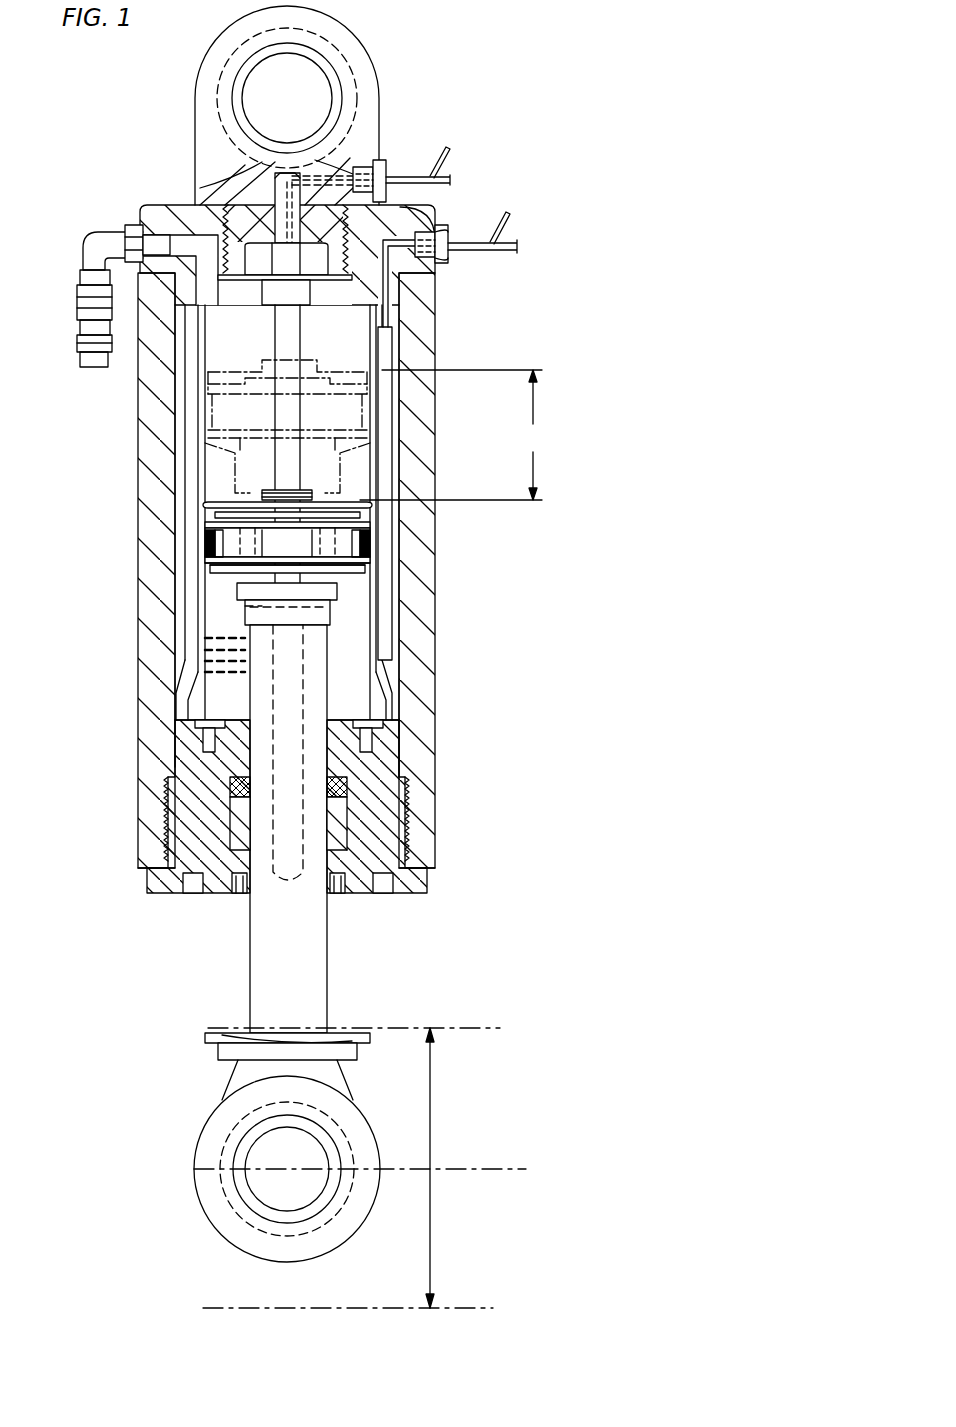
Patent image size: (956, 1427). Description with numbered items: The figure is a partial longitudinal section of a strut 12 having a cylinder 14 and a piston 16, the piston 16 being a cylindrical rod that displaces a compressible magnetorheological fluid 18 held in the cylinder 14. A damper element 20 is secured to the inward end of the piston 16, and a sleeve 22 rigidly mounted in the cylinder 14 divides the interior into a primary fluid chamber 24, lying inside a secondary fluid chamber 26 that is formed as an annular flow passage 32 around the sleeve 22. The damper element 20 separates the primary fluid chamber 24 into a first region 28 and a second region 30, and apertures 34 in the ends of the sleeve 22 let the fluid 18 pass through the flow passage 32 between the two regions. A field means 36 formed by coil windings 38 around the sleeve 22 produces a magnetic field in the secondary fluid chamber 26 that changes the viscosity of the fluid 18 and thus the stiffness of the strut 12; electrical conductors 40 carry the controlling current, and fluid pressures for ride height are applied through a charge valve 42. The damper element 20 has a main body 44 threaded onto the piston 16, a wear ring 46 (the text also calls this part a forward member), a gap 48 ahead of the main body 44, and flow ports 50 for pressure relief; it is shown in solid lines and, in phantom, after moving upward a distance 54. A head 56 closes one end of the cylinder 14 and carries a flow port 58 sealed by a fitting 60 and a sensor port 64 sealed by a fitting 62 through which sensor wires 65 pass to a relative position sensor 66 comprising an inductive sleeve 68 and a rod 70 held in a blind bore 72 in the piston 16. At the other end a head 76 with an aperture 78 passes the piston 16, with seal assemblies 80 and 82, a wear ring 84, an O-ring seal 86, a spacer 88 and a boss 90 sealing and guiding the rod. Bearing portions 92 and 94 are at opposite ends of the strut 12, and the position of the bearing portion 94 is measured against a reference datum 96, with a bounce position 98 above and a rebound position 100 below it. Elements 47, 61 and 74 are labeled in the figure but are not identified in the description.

The strut 12 is at (132, 412).
The cylinder 14 is at (425, 688).
The piston 16 is at (305, 982).
The compressible magnetorheological fluid 18 is at (212, 650).
The damper element 20 is at (383, 410).
The sleeve 22 is at (198, 590).
The primary fluid chamber 24 is at (332, 590).
The secondary fluid chamber 26 is at (398, 645).
The first region 28 is at (287, 332).
The second region 30 is at (227, 690).
The annular-shaped flow passage 32 is at (175, 406).
The apertures 34 is at (204, 310).
The field means 36 is at (210, 530).
The coil windings 38 is at (385, 335).
The electrical conductors 40 is at (510, 222).
The charge valve 42 is at (440, 230).
The main body 44 is at (327, 538).
The wear ring 46 is at (212, 503).
The valve plate 47 is at (190, 518).
The gap 48 is at (212, 548).
The flow ports 50 is at (195, 565).
The distance 54 is at (455, 435).
The head 56 is at (182, 198).
The flow port 58 is at (186, 240).
The fitting 60 is at (126, 228).
The fill valve 61 is at (80, 297).
The fitting 62 is at (379, 162).
The sensor port 64 is at (356, 170).
The sensor wires 65 is at (451, 150).
The relative position sensor 66 is at (305, 607).
The inductive sleeve 68 is at (312, 495).
The rod 70 is at (245, 606).
The bore 72 is at (292, 882).
The fitting nut 74 is at (441, 263).
The head 76 is at (385, 830).
The aperture 78 is at (312, 882).
The seal assembly 80 is at (192, 800).
The seal assembly 82 is at (240, 895).
The wear ring 84 is at (172, 860).
The seal 86 is at (372, 735).
The spacer 88 is at (347, 790).
The boss 90 is at (345, 882).
The bearing portion 92 is at (330, 64).
The bearing portion 94 is at (252, 1128).
The reference datum 96 is at (462, 1169).
The bounce position 98 is at (462, 1028).
The rebound position 100 is at (460, 1308).